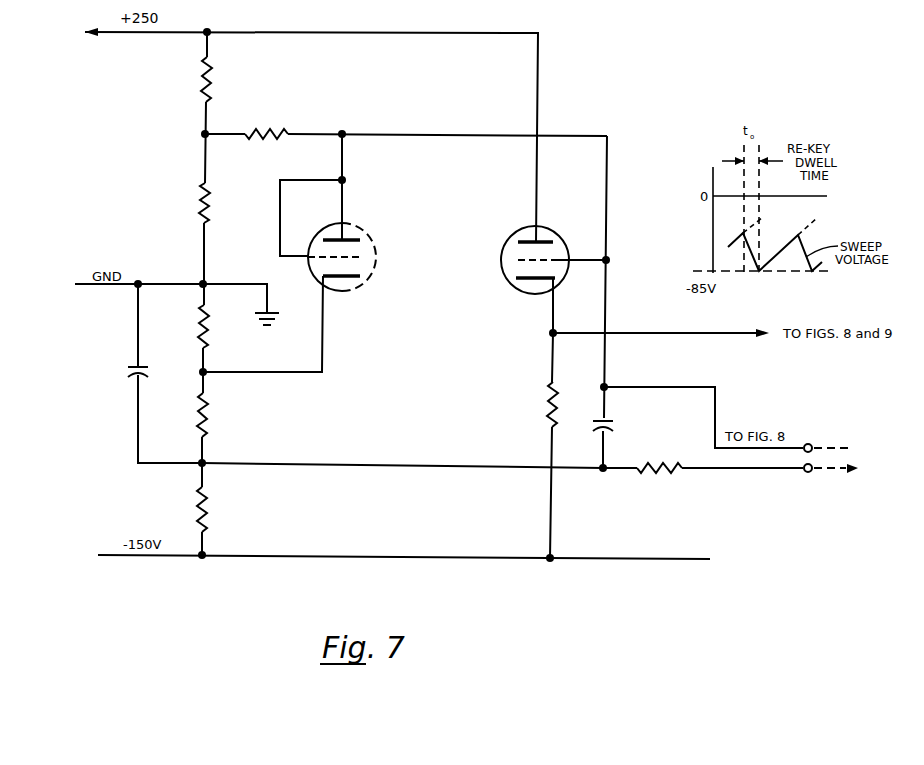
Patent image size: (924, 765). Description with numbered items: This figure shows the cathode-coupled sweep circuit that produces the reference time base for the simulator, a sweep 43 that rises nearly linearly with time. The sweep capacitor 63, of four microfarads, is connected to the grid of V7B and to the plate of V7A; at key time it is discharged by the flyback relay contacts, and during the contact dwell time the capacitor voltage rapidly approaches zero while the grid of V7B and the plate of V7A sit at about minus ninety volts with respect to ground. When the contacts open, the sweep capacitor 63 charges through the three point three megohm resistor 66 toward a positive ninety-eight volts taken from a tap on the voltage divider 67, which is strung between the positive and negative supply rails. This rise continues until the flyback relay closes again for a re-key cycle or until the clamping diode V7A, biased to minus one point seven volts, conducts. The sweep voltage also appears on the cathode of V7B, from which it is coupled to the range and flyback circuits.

The sweep 43 is at (600, 579).
The sweep capacitor 63 is at (612, 429).
The resistor 66 is at (268, 131).
The voltage divider 67 is at (165, 189).
The clamping diode V7A is at (373, 247).
The cathode follower triode V7B is at (516, 238).